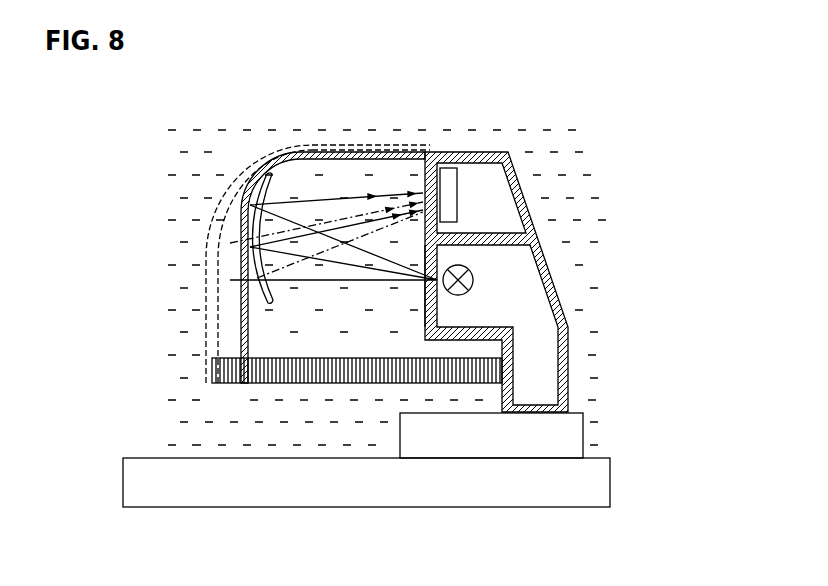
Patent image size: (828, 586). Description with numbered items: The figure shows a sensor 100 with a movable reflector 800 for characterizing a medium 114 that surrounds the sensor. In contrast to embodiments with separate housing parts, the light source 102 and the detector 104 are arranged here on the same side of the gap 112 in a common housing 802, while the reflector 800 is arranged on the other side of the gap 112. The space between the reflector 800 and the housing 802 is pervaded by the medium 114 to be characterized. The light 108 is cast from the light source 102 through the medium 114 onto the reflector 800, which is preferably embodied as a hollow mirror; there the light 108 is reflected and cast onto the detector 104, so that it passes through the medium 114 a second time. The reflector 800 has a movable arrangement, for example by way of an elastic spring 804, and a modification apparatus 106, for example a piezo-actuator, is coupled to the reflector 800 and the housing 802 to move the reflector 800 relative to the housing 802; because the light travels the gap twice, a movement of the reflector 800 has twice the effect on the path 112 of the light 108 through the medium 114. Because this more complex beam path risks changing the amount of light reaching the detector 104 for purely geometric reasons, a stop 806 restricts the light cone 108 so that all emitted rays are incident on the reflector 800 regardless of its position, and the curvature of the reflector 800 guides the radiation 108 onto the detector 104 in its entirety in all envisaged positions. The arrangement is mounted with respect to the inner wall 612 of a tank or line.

The sensor 100 is at (208, 140).
The light source 102 is at (474, 285).
The detector 104 is at (448, 175).
The modification apparatus 106 is at (288, 386).
The light 108 is at (397, 190).
The gap 112 is at (342, 328).
The medium 114 is at (341, 165).
The inner wall 612 is at (607, 485).
The reflector 800 is at (266, 152).
The housing 802 is at (548, 272).
The elastic spring 804 is at (302, 145).
The stop 806 is at (422, 303).